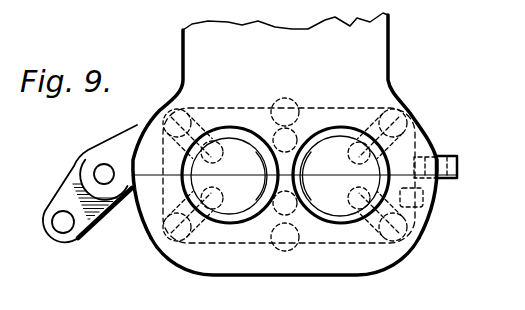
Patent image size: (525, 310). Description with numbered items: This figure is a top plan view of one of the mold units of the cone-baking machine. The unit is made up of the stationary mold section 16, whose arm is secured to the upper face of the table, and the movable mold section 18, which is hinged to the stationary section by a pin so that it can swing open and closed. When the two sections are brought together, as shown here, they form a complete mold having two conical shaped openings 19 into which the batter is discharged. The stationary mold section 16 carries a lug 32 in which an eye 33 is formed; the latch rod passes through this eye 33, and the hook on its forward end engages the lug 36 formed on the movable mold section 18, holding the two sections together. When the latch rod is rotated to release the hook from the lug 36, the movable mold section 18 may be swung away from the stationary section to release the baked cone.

The mold section 16 is at (378, 78).
The movable mold section 18 is at (353, 268).
The conical shaped openings 19 is at (229, 146).
The lug 32 is at (457, 167).
The eye 33 is at (442, 157).
The lug 36 is at (425, 210).